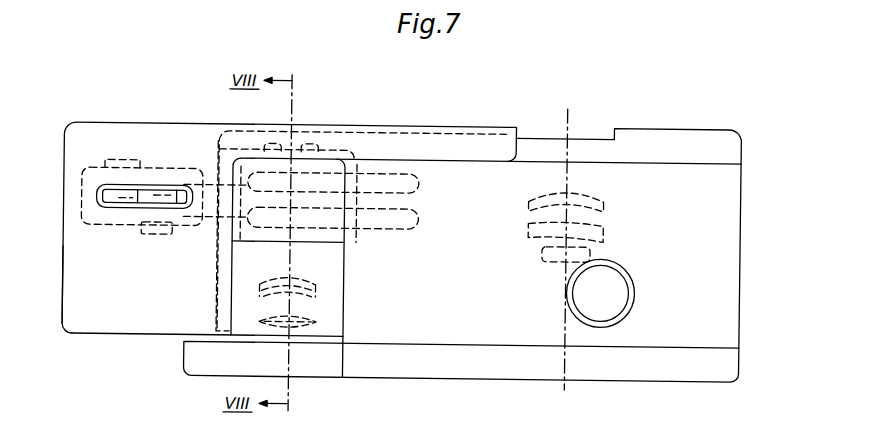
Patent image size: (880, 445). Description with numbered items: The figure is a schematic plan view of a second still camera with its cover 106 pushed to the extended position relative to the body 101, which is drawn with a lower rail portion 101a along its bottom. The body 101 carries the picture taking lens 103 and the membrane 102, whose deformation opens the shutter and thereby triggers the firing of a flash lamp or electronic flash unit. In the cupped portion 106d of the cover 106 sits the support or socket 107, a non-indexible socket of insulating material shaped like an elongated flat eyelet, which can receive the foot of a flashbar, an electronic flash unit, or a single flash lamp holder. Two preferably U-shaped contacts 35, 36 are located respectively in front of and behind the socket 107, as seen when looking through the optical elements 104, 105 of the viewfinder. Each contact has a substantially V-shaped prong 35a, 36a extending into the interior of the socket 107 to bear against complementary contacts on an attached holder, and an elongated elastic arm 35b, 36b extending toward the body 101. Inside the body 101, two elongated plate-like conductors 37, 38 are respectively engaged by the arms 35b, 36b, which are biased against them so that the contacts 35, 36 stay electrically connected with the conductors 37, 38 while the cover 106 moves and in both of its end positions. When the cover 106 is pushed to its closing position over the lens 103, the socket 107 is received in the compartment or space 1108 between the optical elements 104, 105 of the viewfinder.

The body 101 is at (738, 183).
The rail of housing 101a is at (516, 376).
The membrane 102 is at (633, 291).
The picture taking lens 103 is at (606, 223).
The objective of the viewfinder 104 is at (316, 149).
The optical element of the viewfinder 105 is at (312, 326).
The cover 106 is at (163, 341).
The cupped portion of the cover 106d is at (70, 319).
The support or socket 107 is at (99, 189).
The compartment or space 1108 is at (334, 234).
The contact 35 is at (129, 172).
The V-shaped prong of the contact 35a is at (126, 203).
The elastic arm of the contact 35b is at (247, 179).
The contact 36 is at (152, 218).
The V-shaped prong of the contact 36a is at (166, 198).
The elastic arm of the contact 36b is at (238, 257).
The plate-like conductor 37 is at (425, 202).
The plate-like conductor 38 is at (426, 228).